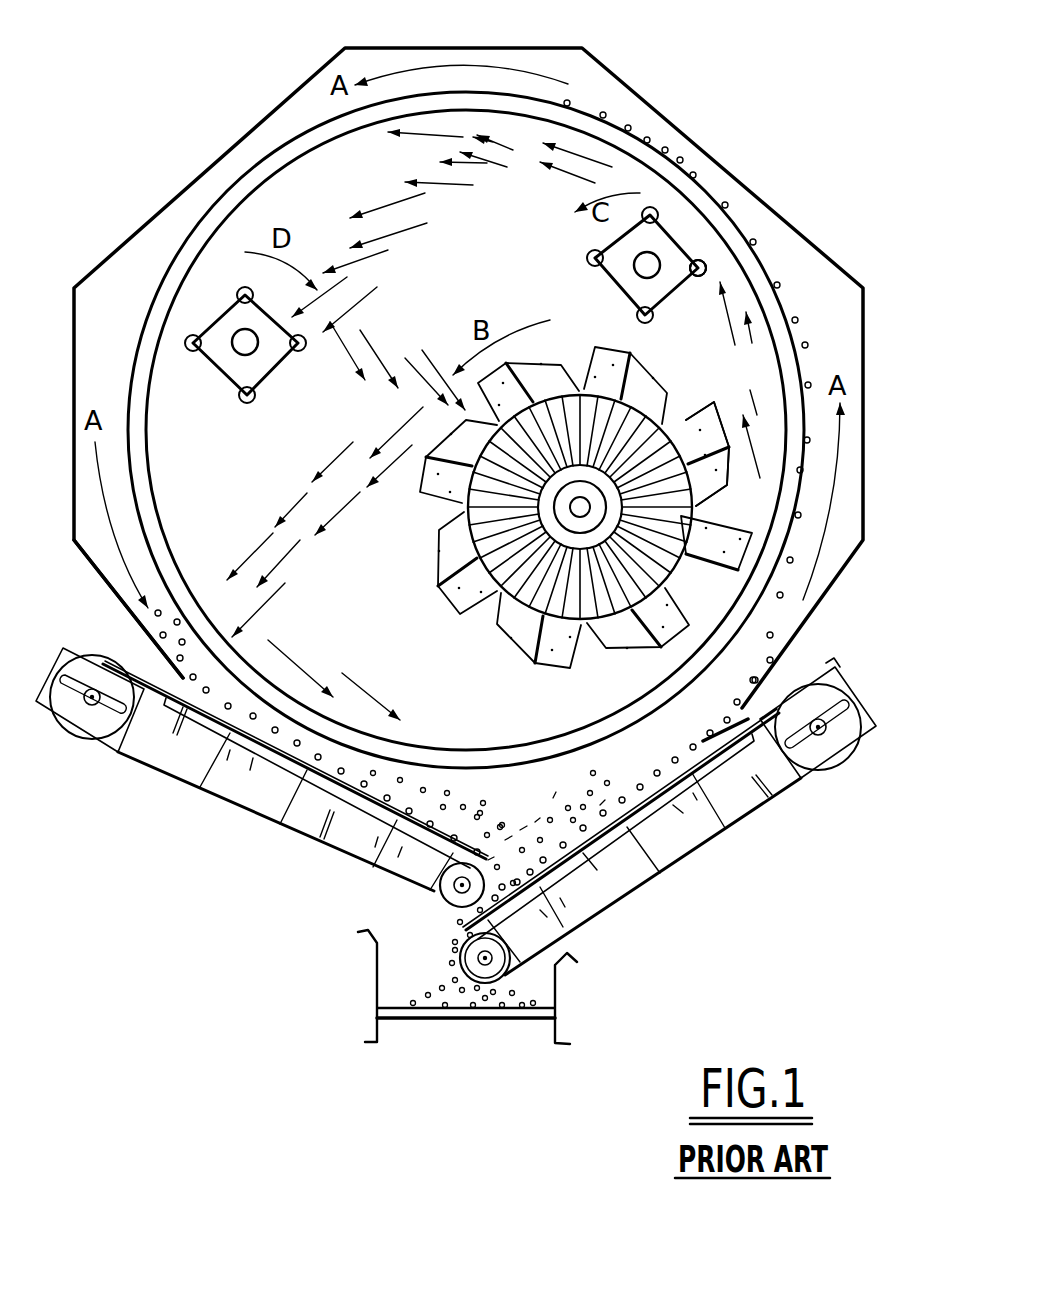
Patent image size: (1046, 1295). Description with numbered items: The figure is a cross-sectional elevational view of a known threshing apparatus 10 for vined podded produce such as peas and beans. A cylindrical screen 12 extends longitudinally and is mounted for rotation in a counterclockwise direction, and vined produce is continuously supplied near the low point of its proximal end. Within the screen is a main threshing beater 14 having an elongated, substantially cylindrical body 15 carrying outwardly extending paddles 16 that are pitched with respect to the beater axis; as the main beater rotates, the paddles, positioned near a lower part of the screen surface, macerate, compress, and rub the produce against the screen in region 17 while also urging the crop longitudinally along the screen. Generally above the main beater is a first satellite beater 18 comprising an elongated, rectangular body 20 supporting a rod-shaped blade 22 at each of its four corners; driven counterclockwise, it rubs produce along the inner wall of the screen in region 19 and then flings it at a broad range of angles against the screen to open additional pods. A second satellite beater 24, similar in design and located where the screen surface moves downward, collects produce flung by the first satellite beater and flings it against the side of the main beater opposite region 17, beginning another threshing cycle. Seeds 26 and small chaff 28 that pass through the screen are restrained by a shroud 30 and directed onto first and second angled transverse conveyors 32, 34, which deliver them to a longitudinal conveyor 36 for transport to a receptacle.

The threshing apparatus 10 is at (805, 95).
The cylindrical screen 12 is at (232, 212).
The main threshing beater 14 is at (688, 507).
The body 15 is at (682, 528).
The paddles 16 is at (735, 570).
The region 17 is at (713, 623).
The first satellite beater 18 is at (683, 255).
The region 19 is at (702, 248).
The rectangular body 20 is at (238, 320).
The rod-shaped blade 22 is at (200, 352).
The second satellite beater 24 is at (218, 326).
The seeds 26 is at (150, 625).
The small chaff 28 is at (600, 787).
The shroud 30 is at (863, 380).
The first angled transverse conveyor 32 is at (287, 753).
The second angled transverse conveyor 34 is at (590, 847).
The longitudinal conveyor 36 is at (467, 1012).